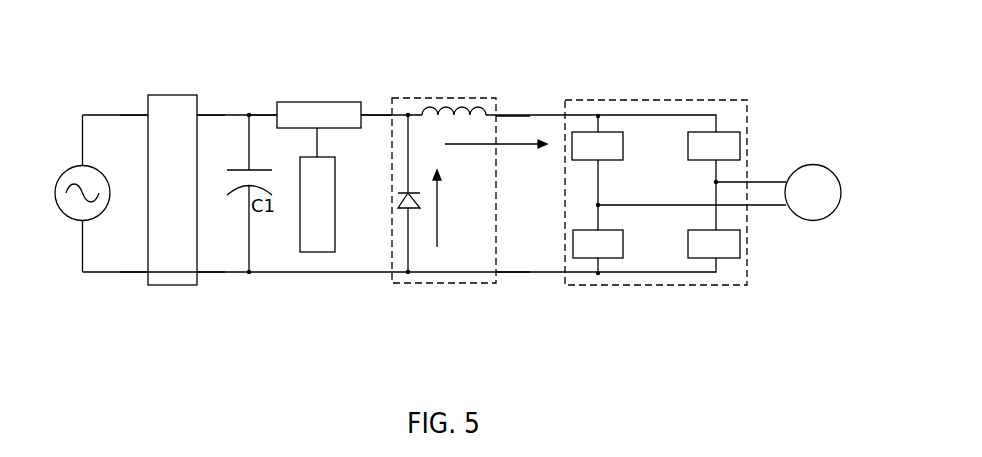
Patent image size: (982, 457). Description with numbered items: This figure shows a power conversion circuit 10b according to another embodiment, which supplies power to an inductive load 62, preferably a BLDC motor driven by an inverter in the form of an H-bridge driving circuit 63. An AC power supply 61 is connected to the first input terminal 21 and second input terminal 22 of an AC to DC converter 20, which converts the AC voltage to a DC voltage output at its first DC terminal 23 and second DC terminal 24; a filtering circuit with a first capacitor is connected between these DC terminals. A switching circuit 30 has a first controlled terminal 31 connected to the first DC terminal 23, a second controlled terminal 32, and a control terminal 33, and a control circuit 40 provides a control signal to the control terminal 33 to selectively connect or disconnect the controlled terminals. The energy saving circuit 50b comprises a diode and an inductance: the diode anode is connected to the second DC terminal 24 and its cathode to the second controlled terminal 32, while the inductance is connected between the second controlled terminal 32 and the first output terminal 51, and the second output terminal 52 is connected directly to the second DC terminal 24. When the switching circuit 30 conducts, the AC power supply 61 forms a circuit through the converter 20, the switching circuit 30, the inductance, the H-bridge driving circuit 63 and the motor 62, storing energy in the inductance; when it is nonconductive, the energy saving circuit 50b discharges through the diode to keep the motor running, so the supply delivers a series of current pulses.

The power conversion circuit 10b is at (534, 80).
The AC to DC converter 20 is at (165, 95).
The first input terminal 21 is at (134, 124).
The second input terminal 22 is at (134, 261).
The first DC terminal 23 is at (211, 124).
The second DC terminal 24 is at (211, 261).
The switching circuit 30 is at (307, 101).
The first controlled terminal 31 is at (263, 104).
The second controlled terminal 32 is at (376, 104).
The control terminal 33 is at (308, 142).
The control circuit 40 is at (335, 188).
The energy saving circuit 50b is at (412, 98).
The first output terminal 51 is at (513, 126).
The second output terminal 52 is at (513, 261).
The AC power supply 61 is at (55, 207).
The inductive load 62 is at (812, 165).
The H-bridge driving circuit 63 is at (688, 100).